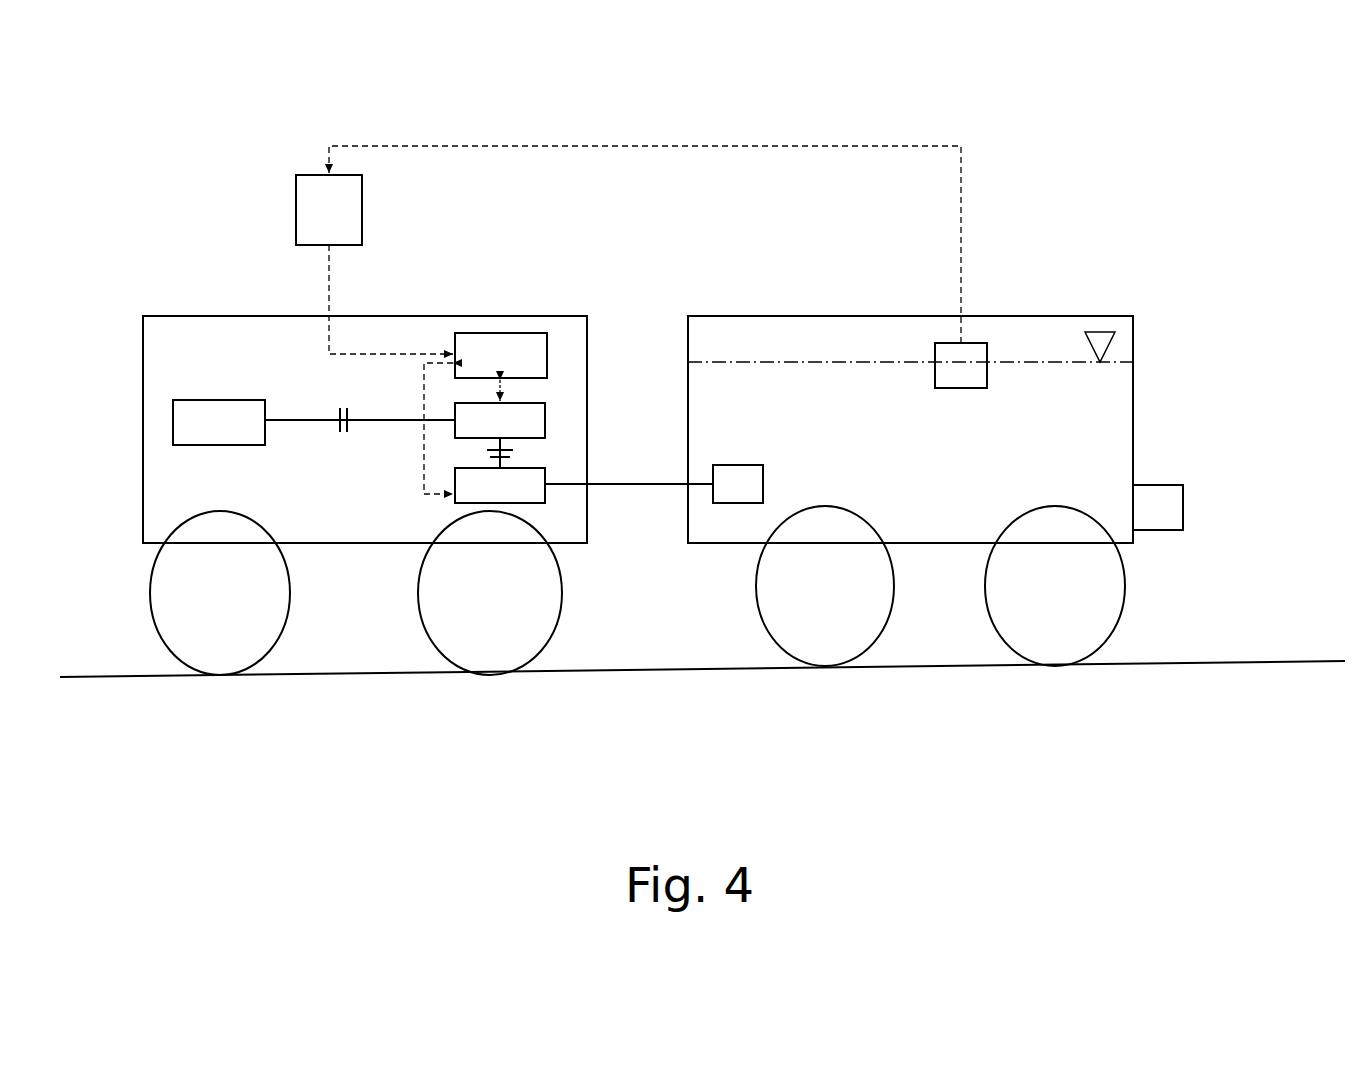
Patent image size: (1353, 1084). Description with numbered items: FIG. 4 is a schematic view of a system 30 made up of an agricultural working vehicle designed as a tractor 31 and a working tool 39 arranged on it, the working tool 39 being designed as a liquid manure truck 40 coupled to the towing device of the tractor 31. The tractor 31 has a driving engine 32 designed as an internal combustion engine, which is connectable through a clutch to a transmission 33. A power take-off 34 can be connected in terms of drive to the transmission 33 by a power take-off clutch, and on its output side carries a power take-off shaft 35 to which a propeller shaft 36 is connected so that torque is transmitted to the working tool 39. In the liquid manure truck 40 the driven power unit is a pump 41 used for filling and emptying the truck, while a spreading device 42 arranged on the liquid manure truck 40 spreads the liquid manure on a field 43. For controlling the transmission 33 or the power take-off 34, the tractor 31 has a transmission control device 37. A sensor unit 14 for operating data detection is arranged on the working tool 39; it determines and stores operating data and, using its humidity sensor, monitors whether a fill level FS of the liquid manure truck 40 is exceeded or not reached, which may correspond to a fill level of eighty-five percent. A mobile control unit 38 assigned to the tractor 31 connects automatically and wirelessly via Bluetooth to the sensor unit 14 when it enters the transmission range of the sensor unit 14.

The sensor unit 14 is at (962, 353).
The system 30 is at (1145, 187).
The tractor 31 is at (190, 315).
The driving engine 32 is at (228, 415).
The transmission 33 is at (535, 425).
The power take-off 34 is at (535, 478).
The power take-off shaft 35 is at (567, 487).
The propeller shaft 36 is at (623, 487).
The transmission control device 37 is at (513, 335).
The control unit 38 is at (334, 203).
The working tool 39 is at (910, 408).
The liquid manure truck 40 is at (783, 315).
The pump 41 is at (745, 480).
The spreading device 42 is at (1158, 500).
The field 43 is at (543, 673).
The fill level FS is at (1107, 337).